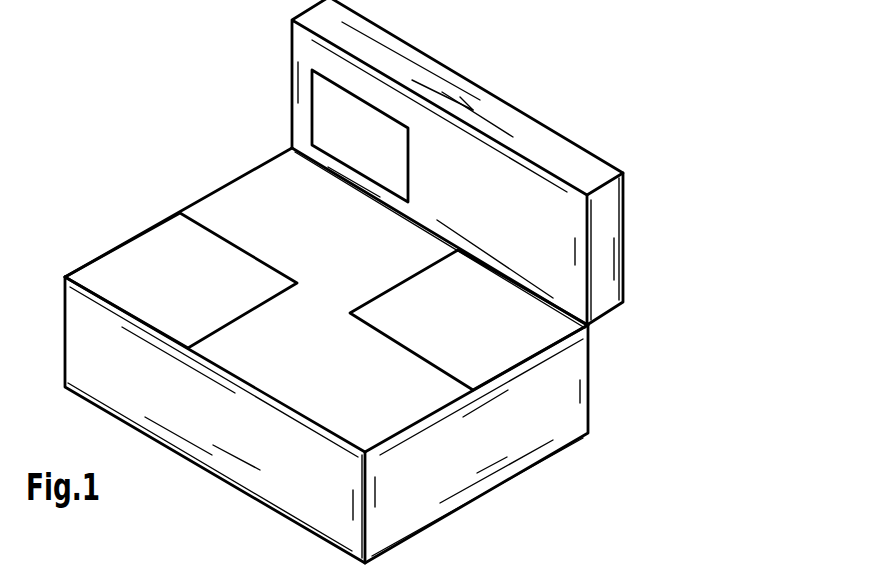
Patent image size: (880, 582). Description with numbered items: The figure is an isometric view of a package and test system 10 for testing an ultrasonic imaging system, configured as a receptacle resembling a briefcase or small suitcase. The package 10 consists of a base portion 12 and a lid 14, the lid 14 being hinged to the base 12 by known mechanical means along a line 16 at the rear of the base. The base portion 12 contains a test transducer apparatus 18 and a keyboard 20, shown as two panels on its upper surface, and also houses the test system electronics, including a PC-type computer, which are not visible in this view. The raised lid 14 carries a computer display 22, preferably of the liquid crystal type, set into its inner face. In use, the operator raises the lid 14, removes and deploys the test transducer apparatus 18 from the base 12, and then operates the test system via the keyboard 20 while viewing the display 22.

The package and test system 10 is at (668, 242).
The base portion 12 is at (588, 414).
The lid 14 is at (500, 98).
The hinge line 16 is at (492, 263).
The test transducer apparatus 18 is at (527, 343).
The keyboard 20 is at (155, 253).
The computer display 22 is at (410, 182).